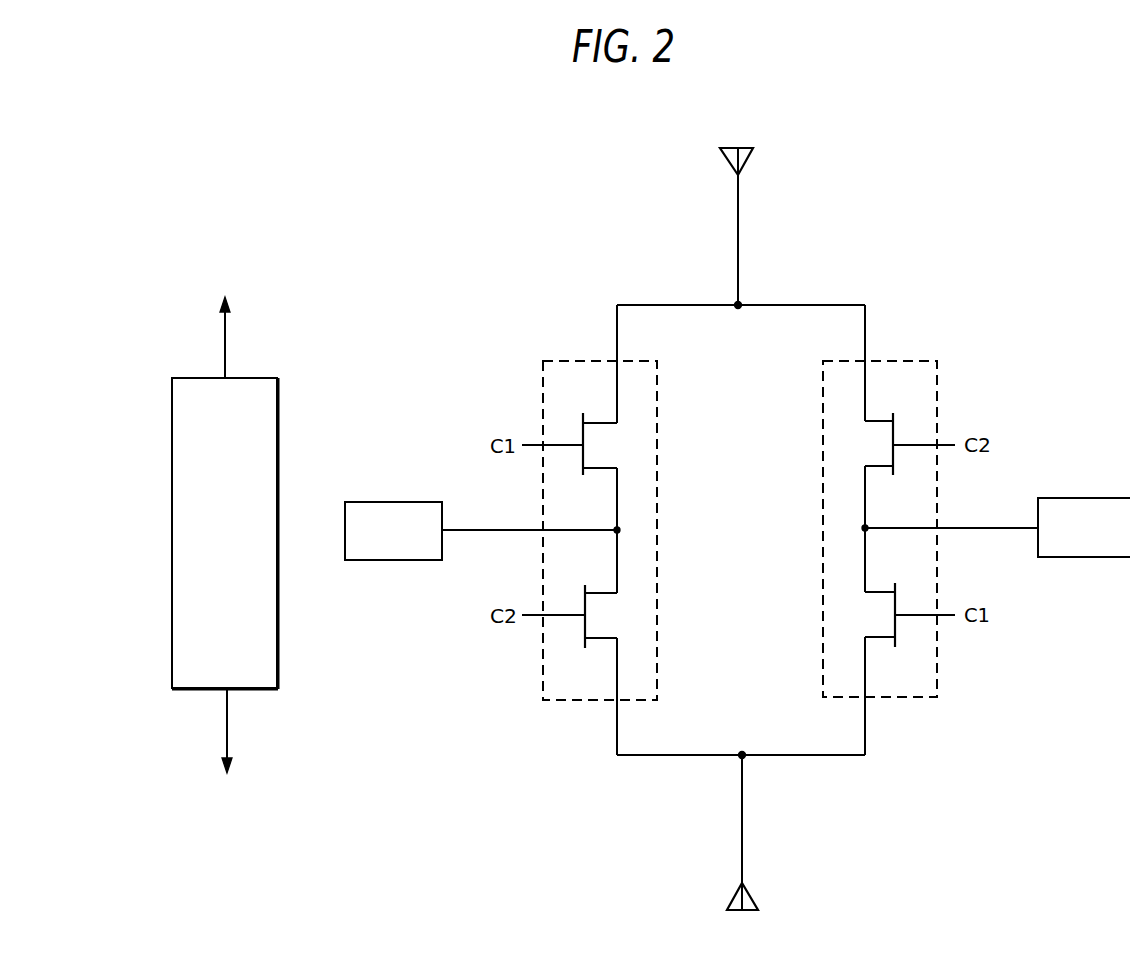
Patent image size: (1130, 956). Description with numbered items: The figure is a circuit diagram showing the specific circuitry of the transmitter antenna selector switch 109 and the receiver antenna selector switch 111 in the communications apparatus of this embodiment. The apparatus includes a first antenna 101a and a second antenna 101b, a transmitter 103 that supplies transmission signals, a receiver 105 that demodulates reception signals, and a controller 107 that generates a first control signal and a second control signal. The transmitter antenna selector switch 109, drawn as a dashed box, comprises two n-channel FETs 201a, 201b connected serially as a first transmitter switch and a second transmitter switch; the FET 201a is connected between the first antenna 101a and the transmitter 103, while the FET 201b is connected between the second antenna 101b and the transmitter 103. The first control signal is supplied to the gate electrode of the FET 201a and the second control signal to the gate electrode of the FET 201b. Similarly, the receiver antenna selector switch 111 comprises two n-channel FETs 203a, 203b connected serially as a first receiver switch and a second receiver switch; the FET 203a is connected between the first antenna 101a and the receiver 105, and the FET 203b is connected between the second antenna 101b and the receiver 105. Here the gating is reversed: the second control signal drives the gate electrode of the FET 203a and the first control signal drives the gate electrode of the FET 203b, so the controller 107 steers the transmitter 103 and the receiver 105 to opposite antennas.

The first antenna 101a is at (762, 133).
The second antenna 101b is at (772, 879).
The transmitter 103 is at (396, 501).
The receiver 105 is at (1089, 498).
The controller 107 is at (172, 534).
The transmitter antenna selector switch 109 is at (660, 441).
The receiver antenna selector switch 111 is at (822, 612).
The FET 201a is at (597, 421).
The FET 201b is at (597, 592).
The FET 203a is at (893, 403).
The FET 203b is at (893, 575).